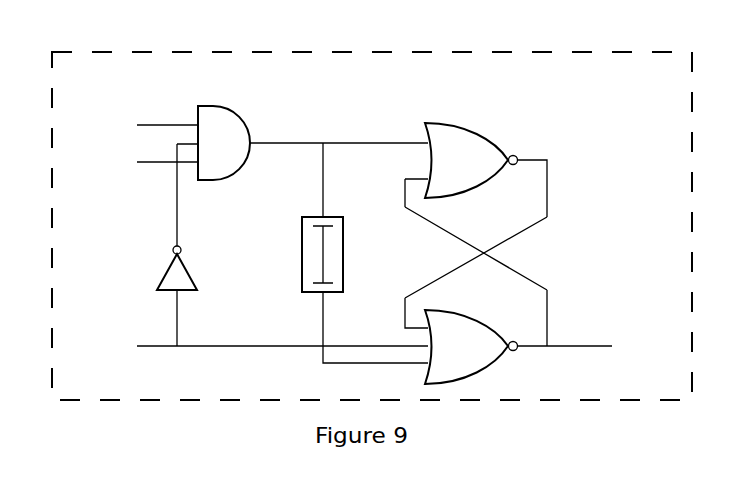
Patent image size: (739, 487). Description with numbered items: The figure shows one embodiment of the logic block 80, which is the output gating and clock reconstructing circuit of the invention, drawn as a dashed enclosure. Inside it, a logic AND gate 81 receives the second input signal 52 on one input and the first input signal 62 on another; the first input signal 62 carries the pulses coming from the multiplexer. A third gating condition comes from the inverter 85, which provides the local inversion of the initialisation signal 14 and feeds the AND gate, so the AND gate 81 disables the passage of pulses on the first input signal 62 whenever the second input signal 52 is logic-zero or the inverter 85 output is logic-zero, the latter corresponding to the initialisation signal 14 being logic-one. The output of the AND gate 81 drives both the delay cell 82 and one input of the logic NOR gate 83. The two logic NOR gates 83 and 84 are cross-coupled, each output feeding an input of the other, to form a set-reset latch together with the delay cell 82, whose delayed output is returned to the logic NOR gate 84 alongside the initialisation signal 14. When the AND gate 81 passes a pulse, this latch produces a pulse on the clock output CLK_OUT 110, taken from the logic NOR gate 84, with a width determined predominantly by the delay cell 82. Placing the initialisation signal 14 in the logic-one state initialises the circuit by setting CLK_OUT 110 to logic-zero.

The logic block 80 is at (168, 402).
The logic AND gate 81 is at (183, 97).
The second input signal 52 is at (122, 117).
The first input signal 62 is at (126, 172).
The inverter 85 is at (157, 272).
The delay cell 82 is at (280, 253).
The initialisation signal 14 is at (240, 355).
The logic NOR gate 83 is at (507, 125).
The logic NOR gate 84 is at (508, 365).
The CLK_OUT 110 is at (595, 353).